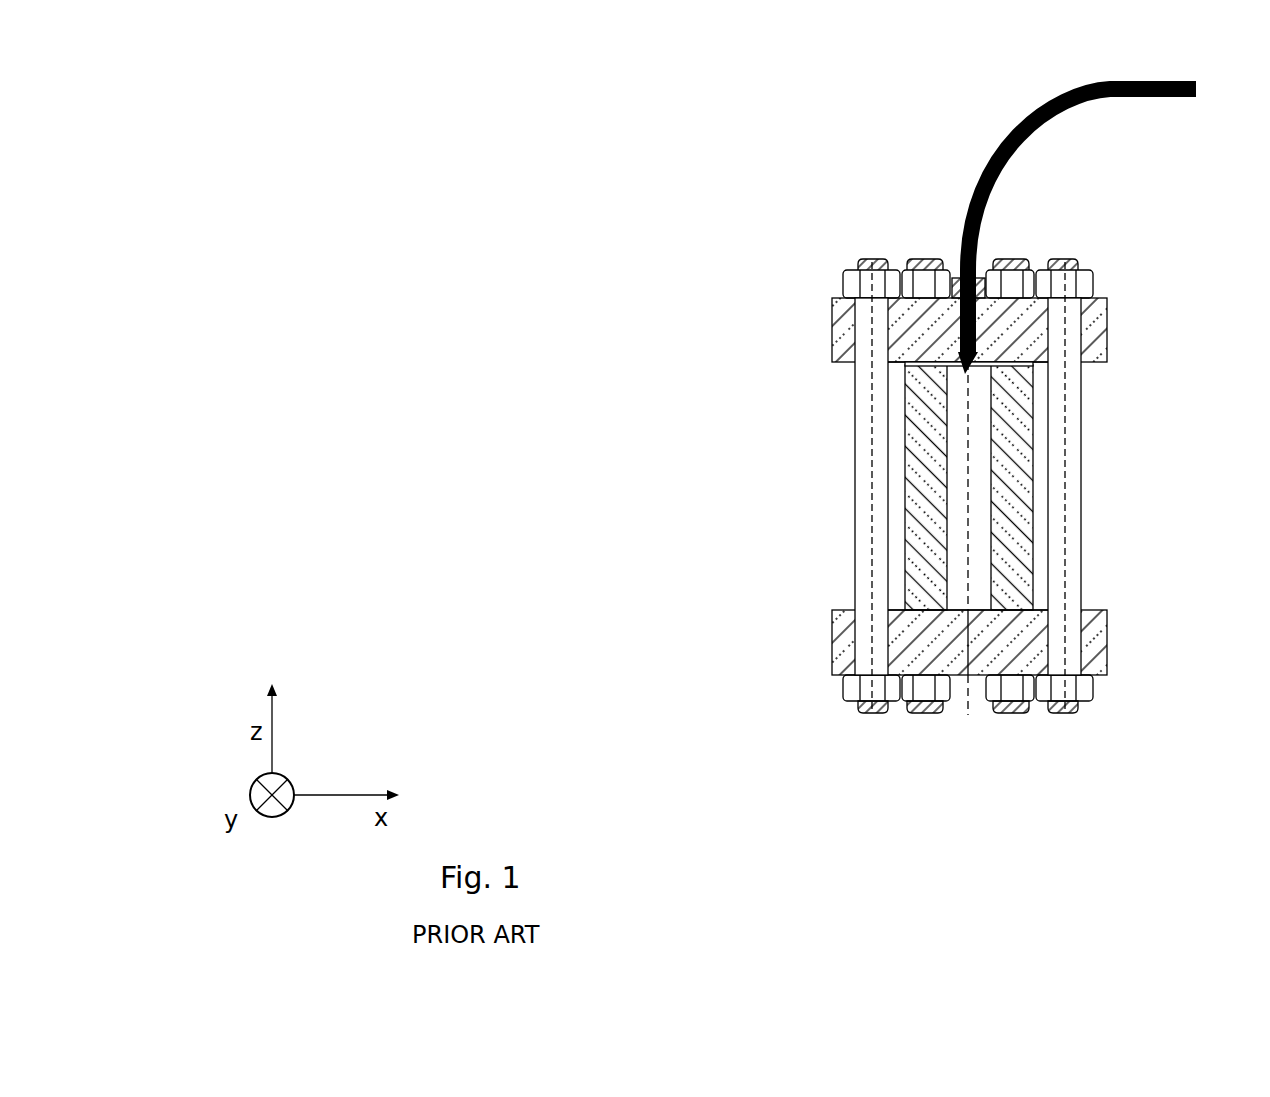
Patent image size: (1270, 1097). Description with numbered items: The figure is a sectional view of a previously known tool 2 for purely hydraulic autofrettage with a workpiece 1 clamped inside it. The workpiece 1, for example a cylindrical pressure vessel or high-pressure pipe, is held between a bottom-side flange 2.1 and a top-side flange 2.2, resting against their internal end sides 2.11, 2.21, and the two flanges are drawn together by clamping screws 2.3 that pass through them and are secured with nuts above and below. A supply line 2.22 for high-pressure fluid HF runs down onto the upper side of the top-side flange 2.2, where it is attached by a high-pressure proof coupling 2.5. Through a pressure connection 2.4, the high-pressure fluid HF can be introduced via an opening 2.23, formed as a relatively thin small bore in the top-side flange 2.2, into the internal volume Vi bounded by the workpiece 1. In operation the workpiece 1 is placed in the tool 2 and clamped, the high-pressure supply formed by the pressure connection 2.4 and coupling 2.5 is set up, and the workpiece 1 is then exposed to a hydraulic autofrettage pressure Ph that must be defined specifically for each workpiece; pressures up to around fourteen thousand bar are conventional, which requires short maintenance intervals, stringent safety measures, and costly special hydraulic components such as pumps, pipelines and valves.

The workpiece 1 is at (1042, 437).
The tool for hydraulic autofrettage 2 is at (995, 386).
The bottom-side flange 2.1 is at (1105, 637).
The internal end side 2.11 is at (1095, 602).
The top-side flange 2.2 is at (1107, 315).
The internal end side 2.21 is at (1091, 362).
The supply line for high-pressure fluid 2.22 is at (1168, 99).
The opening for high-pressure fluid 2.23 is at (960, 378).
The clamping screw 2.3 is at (1083, 518).
The pressure connection for high-pressure fluid 2.4 is at (1237, 80).
The high-pressure proof coupling of the supply line 2.5 is at (942, 316).
The high-pressure fluid HF is at (966, 482).
The hydraulic autofrettage pressure Ph is at (965, 577).
The internal volume Vi is at (950, 523).